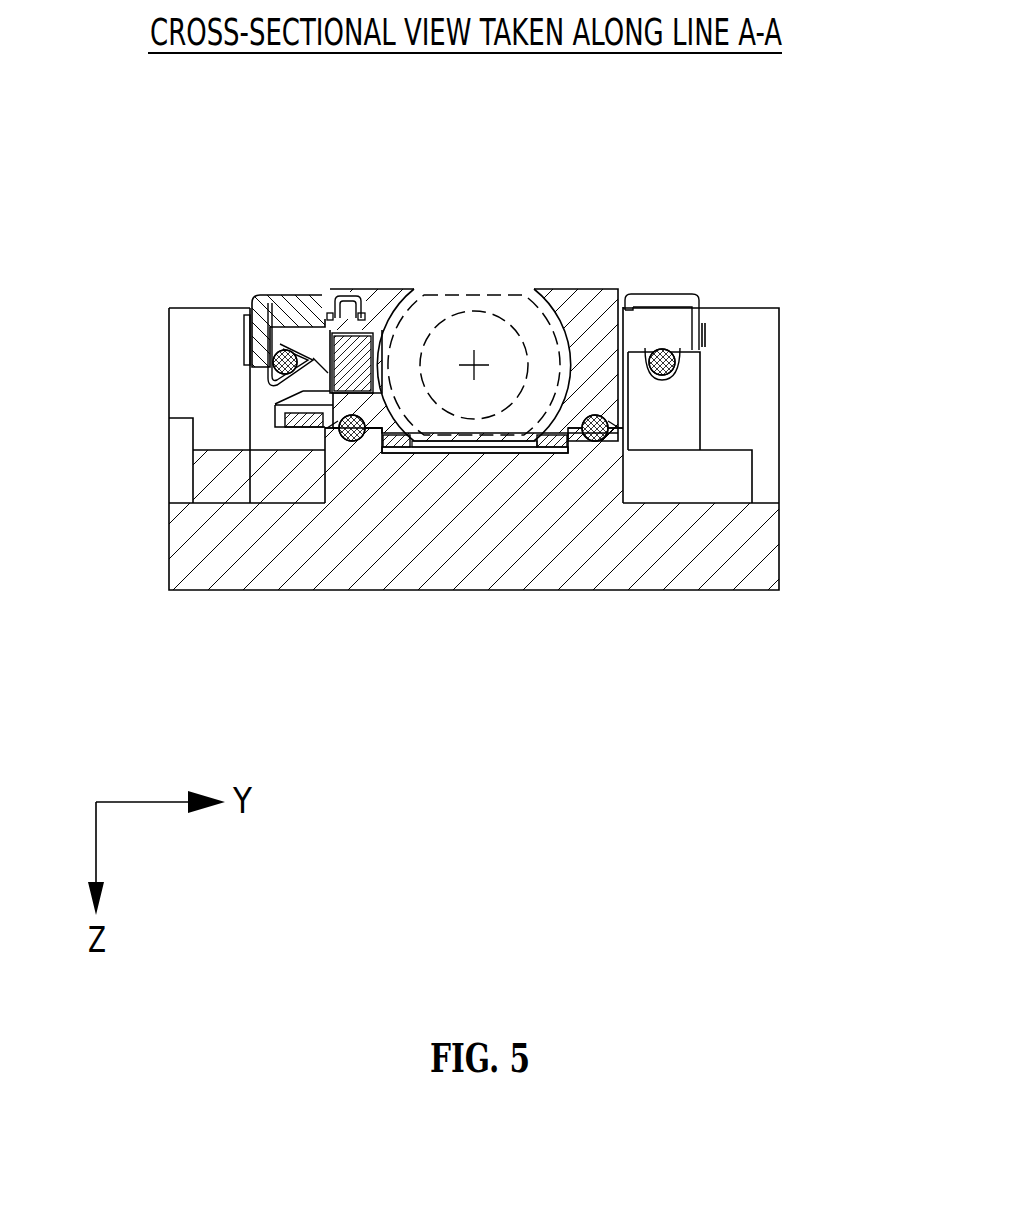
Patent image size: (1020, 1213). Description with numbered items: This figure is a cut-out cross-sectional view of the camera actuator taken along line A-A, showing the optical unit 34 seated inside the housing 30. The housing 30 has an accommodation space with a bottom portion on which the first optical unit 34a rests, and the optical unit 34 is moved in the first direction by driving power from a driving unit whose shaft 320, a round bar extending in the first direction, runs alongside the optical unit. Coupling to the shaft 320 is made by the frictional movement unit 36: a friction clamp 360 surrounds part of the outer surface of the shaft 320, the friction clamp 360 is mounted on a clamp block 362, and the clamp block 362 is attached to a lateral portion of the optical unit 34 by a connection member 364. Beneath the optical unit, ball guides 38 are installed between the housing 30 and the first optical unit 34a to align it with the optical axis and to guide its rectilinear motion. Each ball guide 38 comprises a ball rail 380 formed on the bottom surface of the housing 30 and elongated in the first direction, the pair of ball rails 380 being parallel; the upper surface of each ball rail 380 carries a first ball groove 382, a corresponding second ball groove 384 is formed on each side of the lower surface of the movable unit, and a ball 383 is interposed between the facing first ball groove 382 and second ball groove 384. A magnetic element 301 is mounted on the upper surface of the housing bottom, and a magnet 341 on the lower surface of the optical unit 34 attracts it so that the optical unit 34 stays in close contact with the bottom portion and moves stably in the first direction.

The housing 30 is at (193, 543).
The magnetic element 301 is at (550, 443).
The shaft 320 is at (245, 349).
The optical unit 34 is at (454, 314).
The first optical unit 34a is at (580, 307).
The magnet 341 is at (403, 443).
The frictional movement unit 36 is at (232, 244).
The friction clamp 360 is at (293, 302).
The clamp block 362 is at (273, 317).
The connection member 364 is at (184, 270).
The ball guide 38 is at (546, 586).
The ball rail 380 is at (357, 443).
The first ball groove 382 is at (327, 428).
The ball 383 is at (336, 445).
The second ball groove 384 is at (368, 445).